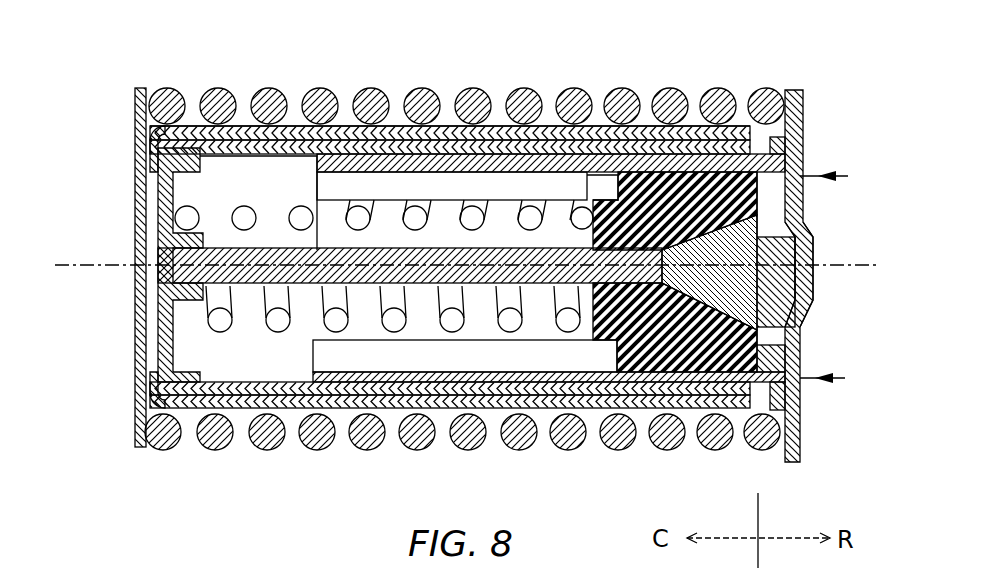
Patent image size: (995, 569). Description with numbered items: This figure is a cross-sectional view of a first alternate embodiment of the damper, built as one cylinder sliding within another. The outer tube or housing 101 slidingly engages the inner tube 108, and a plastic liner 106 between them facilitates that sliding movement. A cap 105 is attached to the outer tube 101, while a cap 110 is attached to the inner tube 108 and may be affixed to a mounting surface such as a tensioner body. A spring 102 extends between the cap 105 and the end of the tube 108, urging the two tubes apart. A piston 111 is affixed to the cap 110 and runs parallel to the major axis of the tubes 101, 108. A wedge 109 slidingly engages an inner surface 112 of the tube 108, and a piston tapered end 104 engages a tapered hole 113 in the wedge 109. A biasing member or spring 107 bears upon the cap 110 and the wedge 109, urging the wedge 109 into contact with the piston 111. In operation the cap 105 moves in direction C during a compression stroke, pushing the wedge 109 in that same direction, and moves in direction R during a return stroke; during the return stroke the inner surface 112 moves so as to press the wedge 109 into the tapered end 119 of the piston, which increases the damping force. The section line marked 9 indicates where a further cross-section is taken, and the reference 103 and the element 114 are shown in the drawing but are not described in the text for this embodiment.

The spring 102 is at (230, 80).
The ball cage 103 is at (353, 87).
The plastic liner 106 is at (502, 147).
The spring 107 is at (495, 343).
The outer tube 101 is at (175, 190).
The cap 110 is at (335, 180).
The piston 111 is at (205, 262).
The inner surface 112 is at (515, 186).
The piston block 114 is at (722, 180).
The tapered end 119 is at (770, 232).
The tapered hole 113 is at (770, 258).
The wedge 109 is at (797, 333).
The cap 105 is at (805, 107).
The piston tapered end 104 is at (790, 300).
The tube 108 is at (378, 452).
The section line 9- 9 is at (832, 278).